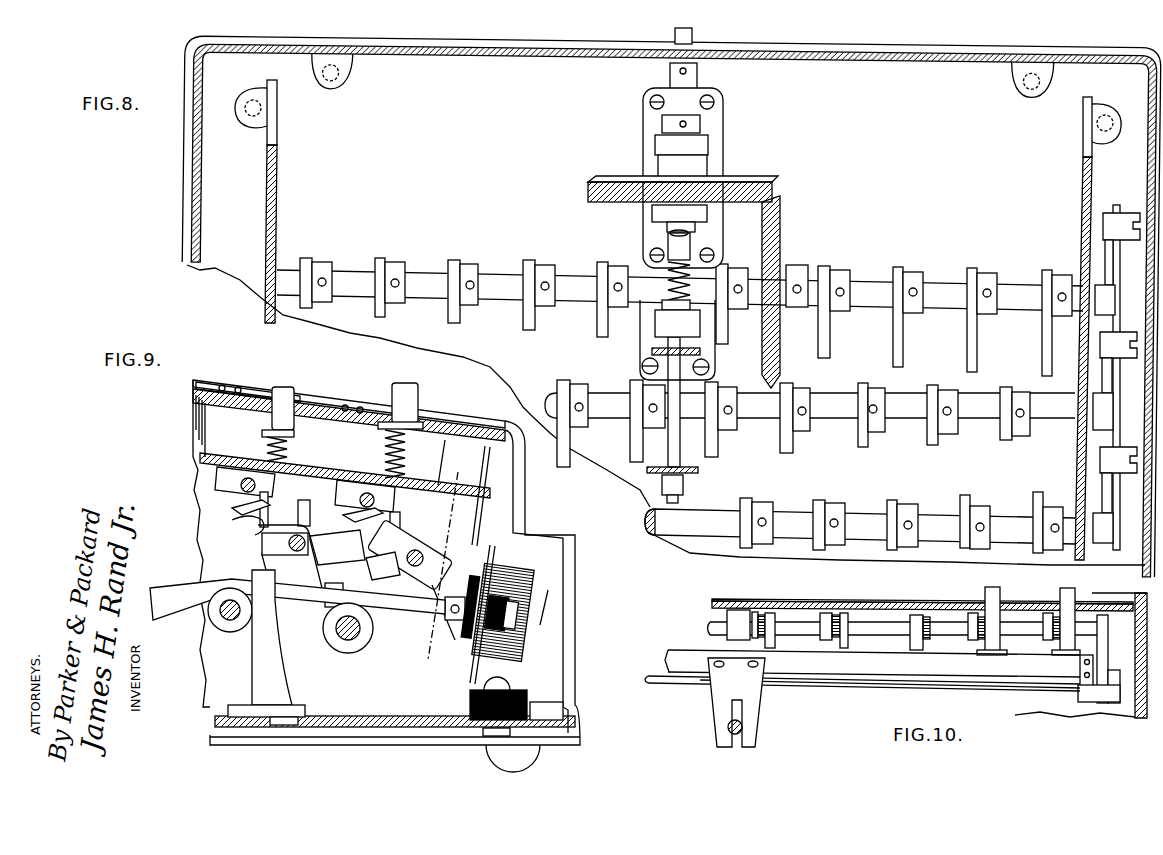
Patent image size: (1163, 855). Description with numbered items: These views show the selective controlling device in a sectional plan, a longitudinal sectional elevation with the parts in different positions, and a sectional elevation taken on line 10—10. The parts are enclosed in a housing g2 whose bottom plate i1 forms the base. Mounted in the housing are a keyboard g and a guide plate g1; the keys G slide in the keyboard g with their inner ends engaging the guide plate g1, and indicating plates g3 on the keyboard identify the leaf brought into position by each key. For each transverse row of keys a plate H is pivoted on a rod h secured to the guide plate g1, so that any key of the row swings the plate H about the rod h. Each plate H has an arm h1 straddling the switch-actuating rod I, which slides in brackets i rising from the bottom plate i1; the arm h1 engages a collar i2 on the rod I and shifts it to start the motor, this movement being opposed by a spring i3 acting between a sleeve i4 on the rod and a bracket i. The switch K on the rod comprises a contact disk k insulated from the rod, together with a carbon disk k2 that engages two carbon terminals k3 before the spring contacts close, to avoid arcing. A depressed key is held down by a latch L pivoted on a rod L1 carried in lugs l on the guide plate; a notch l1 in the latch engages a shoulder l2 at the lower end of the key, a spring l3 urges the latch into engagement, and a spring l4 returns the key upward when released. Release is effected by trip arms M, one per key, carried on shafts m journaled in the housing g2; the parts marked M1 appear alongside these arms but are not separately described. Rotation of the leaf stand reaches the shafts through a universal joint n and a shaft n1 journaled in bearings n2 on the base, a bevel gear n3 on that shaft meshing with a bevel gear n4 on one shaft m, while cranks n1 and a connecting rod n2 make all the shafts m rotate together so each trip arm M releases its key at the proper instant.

In FIG. 8, the housing g2 is at (194, 180).
In FIG. 9, the housing g2 is at (403, 576).
In FIG. 9, the keyboard g is at (328, 398).
In FIG. 9, the guide plate g1 is at (205, 455).
In FIG. 10, the guide plate g1 is at (872, 603).
In FIG. 9, the indicating plates g3 is at (233, 385).
In FIG. 9, the keys G is at (283, 386).
In FIG. 10, the keys G is at (1060, 592).
In FIG. 8, the universal joint n is at (697, 80).
In FIG. 8, the shaft n1 is at (1103, 245).
In FIG. 8, the bearings n2 is at (705, 203).
In FIG. 8, the bevel gear n3 is at (590, 190).
In FIG. 8, the bevel gear n4 is at (781, 218).
In FIG. 8, the brackets i is at (700, 330).
In FIG. 9, the brackets i is at (252, 666).
In FIG. 8, the bottom plate i1 is at (1024, 328).
In FIG. 9, the bottom plate i1 is at (378, 716).
In FIG. 8, the collar i2 is at (660, 370).
In FIG. 9, the collar i2 is at (343, 587).
In FIG. 8, the spring i3 is at (692, 280).
In FIG. 8, the sleeve i4 is at (668, 243).
In FIG. 8, the switch-actuating rod I is at (682, 436).
In FIG. 9, the switch-actuating rod I is at (393, 606).
In FIG. 10, the switch-actuating rod I is at (733, 735).
In FIG. 8, the shafts m is at (680, 407).
In FIG. 9, the shafts m is at (220, 618).
In FIG. 8, the trip arms M is at (893, 342).
In FIG. 9, the trip arms M is at (318, 578).
In FIG. 8, the hanger plate M1 is at (385, 316).
In FIG. 9, the rod h is at (318, 548).
In FIG. 10, the rod h is at (831, 690).
In FIG. 8, the arm h1 is at (650, 351).
In FIG. 9, the arm h1 is at (384, 550).
In FIG. 10, the arm h1 is at (760, 703).
In FIG. 9, the plate H is at (344, 579).
In FIG. 10, the plate H is at (892, 676).
In FIG. 9, the lugs l is at (307, 502).
In FIG. 10, the lugs l is at (1114, 656).
In FIG. 9, the notches l1 is at (236, 521).
In FIG. 9, the shoulders l2 is at (343, 506).
In FIG. 10, the shoulders l2 is at (1055, 655).
In FIG. 9, the spring l3 is at (235, 512).
In FIG. 10, the spring l3 is at (850, 650).
In FIG. 9, the spring l4 is at (290, 440).
In FIG. 9, the latches L is at (269, 562).
In FIG. 10, the latches L is at (772, 648).
In FIG. 9, the rods L1 is at (268, 478).
In FIG. 10, the rods L1 is at (806, 622).
In FIG. 9, the contact disk k is at (470, 683).
In FIG. 9, the carbon disk k2 is at (450, 522).
In FIG. 9, the carbon terminals k3 is at (516, 644).
In FIG. 9, the switch K is at (496, 613).
In FIG. 9, the section line 10 is at (446, 559).